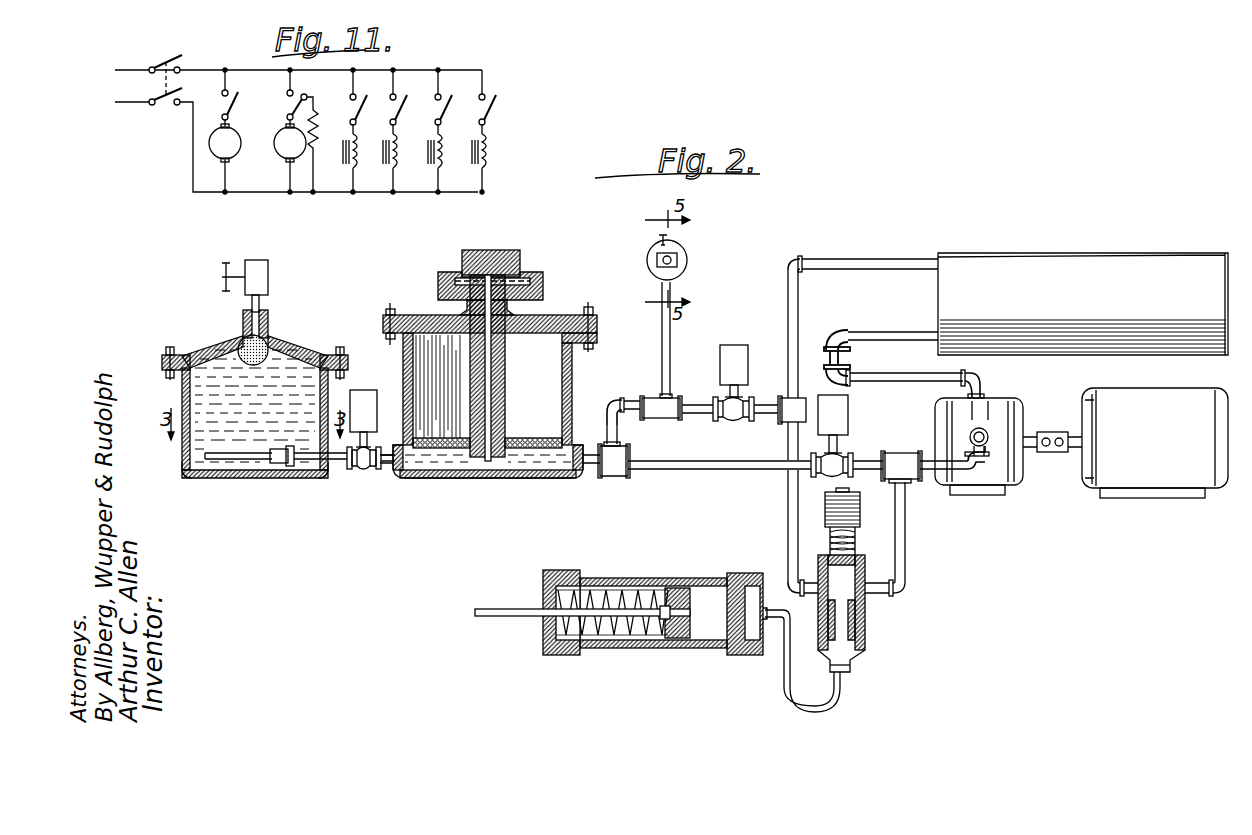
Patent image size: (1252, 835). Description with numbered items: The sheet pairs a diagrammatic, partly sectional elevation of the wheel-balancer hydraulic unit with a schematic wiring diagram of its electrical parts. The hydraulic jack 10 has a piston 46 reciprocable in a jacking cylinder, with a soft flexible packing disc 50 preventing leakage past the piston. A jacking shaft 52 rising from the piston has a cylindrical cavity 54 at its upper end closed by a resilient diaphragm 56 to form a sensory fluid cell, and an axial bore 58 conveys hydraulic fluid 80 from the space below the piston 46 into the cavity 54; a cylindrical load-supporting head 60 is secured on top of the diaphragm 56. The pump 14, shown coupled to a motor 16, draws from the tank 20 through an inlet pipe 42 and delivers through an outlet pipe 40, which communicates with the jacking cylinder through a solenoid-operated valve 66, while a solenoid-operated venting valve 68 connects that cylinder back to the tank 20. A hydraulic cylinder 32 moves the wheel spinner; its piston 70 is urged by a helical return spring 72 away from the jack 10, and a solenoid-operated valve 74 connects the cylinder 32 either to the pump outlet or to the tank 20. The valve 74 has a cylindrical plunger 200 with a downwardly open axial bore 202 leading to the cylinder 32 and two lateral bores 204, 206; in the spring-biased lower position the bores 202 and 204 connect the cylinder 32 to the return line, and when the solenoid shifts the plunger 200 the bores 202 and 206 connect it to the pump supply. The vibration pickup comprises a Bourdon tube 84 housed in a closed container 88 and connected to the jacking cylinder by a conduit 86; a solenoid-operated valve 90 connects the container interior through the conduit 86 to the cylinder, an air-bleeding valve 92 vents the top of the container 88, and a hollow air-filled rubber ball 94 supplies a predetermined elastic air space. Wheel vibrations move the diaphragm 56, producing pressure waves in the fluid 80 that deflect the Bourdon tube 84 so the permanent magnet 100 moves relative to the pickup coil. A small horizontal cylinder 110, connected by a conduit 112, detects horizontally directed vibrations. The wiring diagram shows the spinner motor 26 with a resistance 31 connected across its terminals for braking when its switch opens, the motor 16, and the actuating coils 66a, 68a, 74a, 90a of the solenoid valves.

In FIG. 2, the hydraulic jack 10 is at (400, 315).
In FIG. 2, the pump 14 is at (1020, 473).
In FIG. 11, the motor 16 is at (236, 150).
In FIG. 2, the motor 16 is at (1152, 458).
In FIG. 2, the tank 20 is at (1005, 300).
In FIG. 11, the electric motor 26 is at (279, 136).
In FIG. 11, the resistance 31 is at (316, 118).
In FIG. 2, the hydraulic cylinder 32 is at (705, 648).
In FIG. 2, the outlet pipe 40 is at (940, 480).
In FIG. 2, the inlet pipe 42 is at (985, 378).
In FIG. 2, the piston 46 is at (540, 478).
In FIG. 2, the packing disc 50 is at (430, 448).
In FIG. 2, the jacking shaft 52 is at (505, 410).
In FIG. 2, the cylindrical cavity 54 is at (462, 280).
In FIG. 2, the resilient diaphragm 56 is at (540, 285).
In FIG. 2, the axial bore 58 is at (491, 385).
In FIG. 2, the load-supporting head 60 is at (497, 250).
In FIG. 2, the solenoid-operated valve 66 is at (840, 455).
In FIG. 11, the actuating coil of solenoid valve 66a is at (440, 166).
In FIG. 2, the solenoid-operated venting valve 68 is at (736, 345).
In FIG. 11, the actuating coil of venting valve 68a is at (380, 145).
In FIG. 2, the piston 70 is at (655, 638).
In FIG. 2, the helical return spring 72 is at (600, 648).
In FIG. 2, the solenoid operated valve 74 is at (842, 582).
In FIG. 11, the actuating coil of spinner valve 74a is at (488, 158).
In FIG. 2, the hydraulic fluid 80 is at (460, 468).
In FIG. 2, the Bourdon tube 84 is at (240, 459).
In FIG. 2, the conduit 86 is at (366, 469).
In FIG. 2, the closed container 88 is at (212, 478).
In FIG. 2, the solenoid-operated valve 90 is at (364, 390).
In FIG. 11, the actuating coil of container valve 90a is at (357, 168).
In FIG. 2, the air-bleeding valve 92 is at (258, 275).
In FIG. 2, the air-filled ball 94 is at (270, 338).
In FIG. 2, the permanent magnet 100 is at (280, 463).
In FIG. 2, the horizontally disposed cylinder 110 is at (687, 258).
In FIG. 2, the conduit 112 is at (670, 345).
In FIG. 2, the cylindrical plunger 200 is at (865, 630).
In FIG. 2, the axial bore 202 is at (855, 668).
In FIG. 2, the lateral bore 204 is at (815, 598).
In FIG. 2, the lateral bore 206 is at (868, 605).